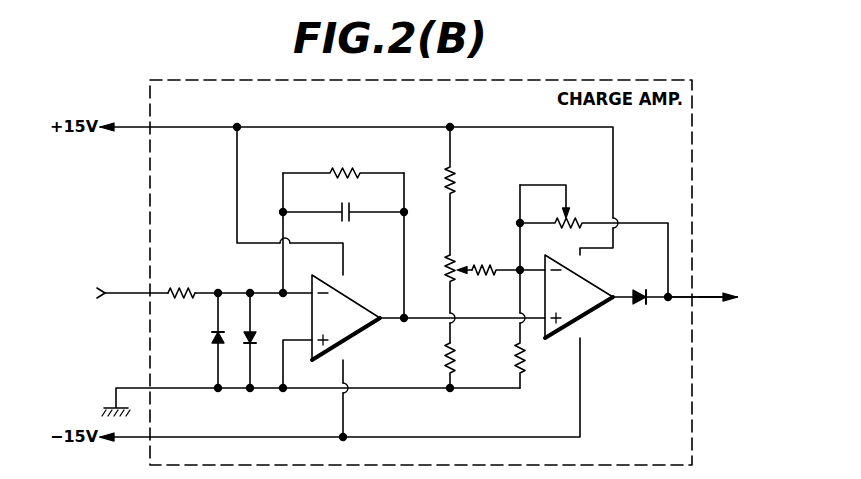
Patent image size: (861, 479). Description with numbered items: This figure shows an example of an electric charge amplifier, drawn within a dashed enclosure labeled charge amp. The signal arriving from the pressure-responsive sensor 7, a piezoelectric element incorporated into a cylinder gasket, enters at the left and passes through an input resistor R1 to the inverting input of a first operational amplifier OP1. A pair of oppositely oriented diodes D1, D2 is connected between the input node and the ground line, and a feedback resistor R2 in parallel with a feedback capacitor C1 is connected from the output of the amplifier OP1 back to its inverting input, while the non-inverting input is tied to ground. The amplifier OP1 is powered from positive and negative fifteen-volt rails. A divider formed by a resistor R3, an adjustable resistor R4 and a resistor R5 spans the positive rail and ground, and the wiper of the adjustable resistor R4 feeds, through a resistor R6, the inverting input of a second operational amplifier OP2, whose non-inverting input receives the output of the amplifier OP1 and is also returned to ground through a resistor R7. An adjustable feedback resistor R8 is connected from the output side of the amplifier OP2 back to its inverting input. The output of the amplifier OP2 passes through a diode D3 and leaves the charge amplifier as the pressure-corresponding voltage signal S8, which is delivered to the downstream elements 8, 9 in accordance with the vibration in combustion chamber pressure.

The pressure-responsive sensor 7 is at (176, 290).
The output to element 8 (TO 8 AND 9) 8 is at (742, 309).
The output to element 9 (TO 8 AND 9) 9 is at (742, 313).
The resistor R1 is at (183, 279).
The feedback resistor R2 is at (343, 231).
The resistor R3 is at (463, 191).
The potentiometer R4 is at (447, 299).
The resistor R5 is at (463, 365).
The resistor R6 is at (498, 259).
The resistor R7 is at (533, 286).
The potentiometer R8 is at (593, 241).
The feedback capacitor C1 is at (344, 222).
The protection diode D1 is at (205, 340).
The protection diode D2 is at (262, 340).
The output diode D3 is at (675, 309).
The operational amplifier OP1 (charge amplifier) OP1 is at (414, 331).
The operational amplifier OP2 is at (575, 305).
The pressure-corresponding voltage signal S8 is at (702, 287).